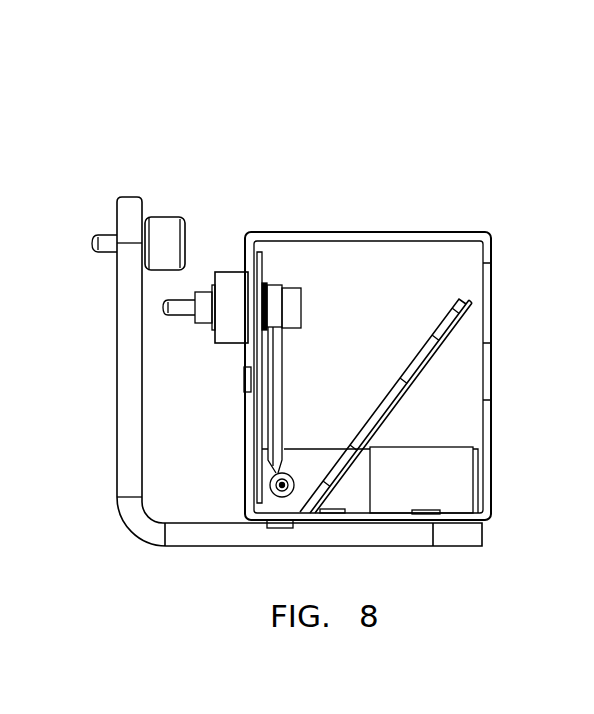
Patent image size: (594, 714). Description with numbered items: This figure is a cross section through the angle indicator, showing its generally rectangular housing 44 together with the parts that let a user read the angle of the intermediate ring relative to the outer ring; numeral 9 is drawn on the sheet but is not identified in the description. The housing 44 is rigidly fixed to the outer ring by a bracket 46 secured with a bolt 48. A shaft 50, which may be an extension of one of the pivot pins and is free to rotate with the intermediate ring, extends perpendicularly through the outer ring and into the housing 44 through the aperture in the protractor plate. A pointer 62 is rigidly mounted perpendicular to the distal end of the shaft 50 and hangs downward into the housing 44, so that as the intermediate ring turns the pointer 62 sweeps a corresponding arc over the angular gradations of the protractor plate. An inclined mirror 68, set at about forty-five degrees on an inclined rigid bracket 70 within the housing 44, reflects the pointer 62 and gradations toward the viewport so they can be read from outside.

The switch assembly mounting bracket 9 is at (225, 333).
The housing 44 is at (491, 293).
The bracket 46 is at (130, 207).
The bolt 48 is at (183, 232).
The shaft 50 is at (180, 305).
The pointer 62 is at (278, 390).
The inclined mirror 68 is at (393, 380).
The inclined rigid bracket 70 is at (422, 378).